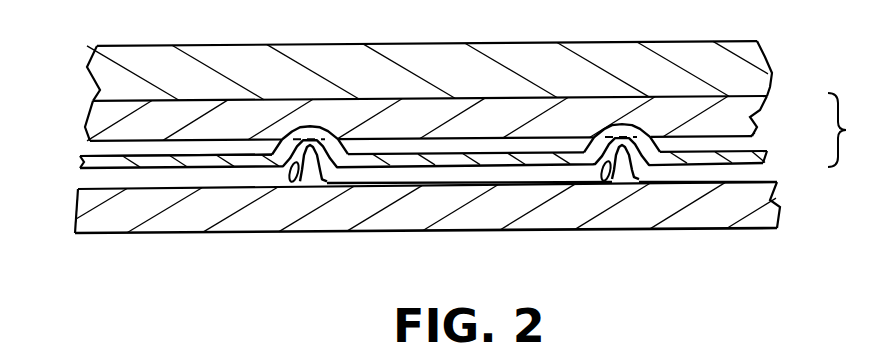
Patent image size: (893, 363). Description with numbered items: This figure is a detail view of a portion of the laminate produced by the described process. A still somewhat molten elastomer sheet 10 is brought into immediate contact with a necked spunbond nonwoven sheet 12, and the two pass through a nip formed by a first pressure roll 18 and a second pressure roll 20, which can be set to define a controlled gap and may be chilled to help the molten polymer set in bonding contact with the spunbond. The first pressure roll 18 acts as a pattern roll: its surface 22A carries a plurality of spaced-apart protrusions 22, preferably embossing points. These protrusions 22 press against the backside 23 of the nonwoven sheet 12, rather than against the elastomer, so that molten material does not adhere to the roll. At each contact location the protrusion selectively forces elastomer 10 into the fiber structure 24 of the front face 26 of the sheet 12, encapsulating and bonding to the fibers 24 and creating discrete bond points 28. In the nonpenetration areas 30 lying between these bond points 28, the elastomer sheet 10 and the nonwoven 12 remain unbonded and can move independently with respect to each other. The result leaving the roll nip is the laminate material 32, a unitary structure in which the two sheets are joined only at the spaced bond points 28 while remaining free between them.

The sheet 10 is at (755, 115).
The nonwoven sheet 12 is at (768, 157).
The first pressure roll 18 is at (768, 210).
The second pressure roll 20 is at (763, 60).
The protrusions 22 is at (300, 182).
The surface 22A is at (398, 184).
The backside 23 is at (105, 178).
The fiber structure 24 is at (158, 165).
The front face 26 is at (130, 155).
The bond points 28 is at (312, 127).
The nonpenetration areas 30 is at (103, 151).
The laminate material 32 is at (849, 130).